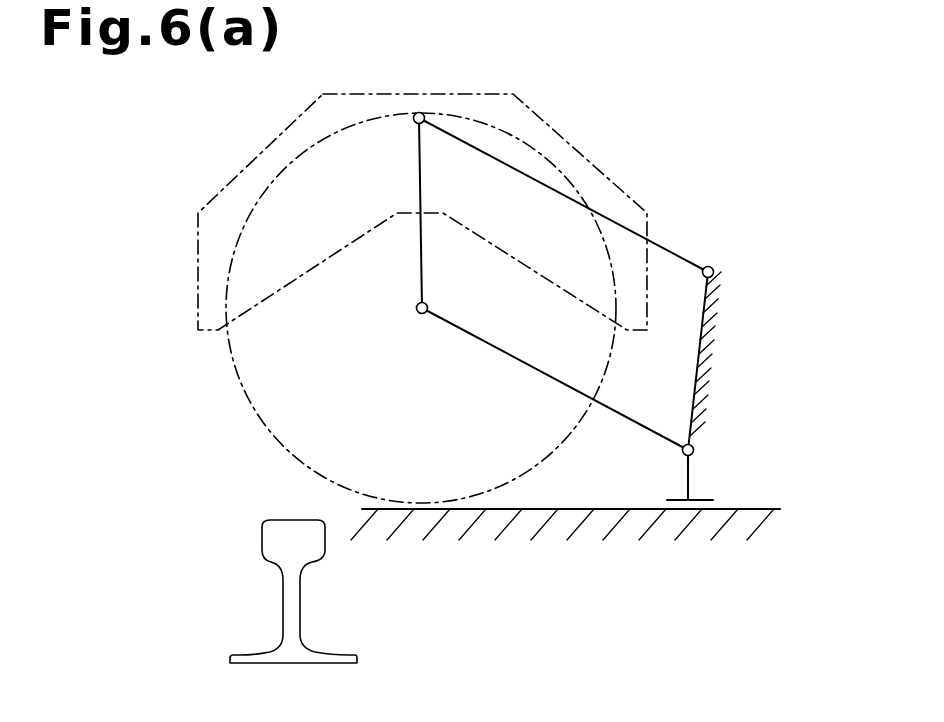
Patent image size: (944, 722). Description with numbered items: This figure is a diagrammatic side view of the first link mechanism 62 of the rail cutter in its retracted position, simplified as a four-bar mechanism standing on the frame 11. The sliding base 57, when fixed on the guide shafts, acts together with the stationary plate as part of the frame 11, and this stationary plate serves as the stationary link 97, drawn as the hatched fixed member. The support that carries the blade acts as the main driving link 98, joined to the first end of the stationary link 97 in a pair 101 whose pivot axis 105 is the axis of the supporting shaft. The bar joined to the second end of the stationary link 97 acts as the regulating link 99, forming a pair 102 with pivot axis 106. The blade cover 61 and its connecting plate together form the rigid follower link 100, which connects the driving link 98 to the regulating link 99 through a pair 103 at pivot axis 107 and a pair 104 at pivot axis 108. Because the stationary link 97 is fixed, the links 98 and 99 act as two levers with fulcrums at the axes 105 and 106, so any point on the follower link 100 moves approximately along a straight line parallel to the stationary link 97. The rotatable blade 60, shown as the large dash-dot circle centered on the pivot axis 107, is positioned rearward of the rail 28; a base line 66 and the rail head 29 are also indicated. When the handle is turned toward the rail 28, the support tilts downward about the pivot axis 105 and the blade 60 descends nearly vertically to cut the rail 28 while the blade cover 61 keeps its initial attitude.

The frame 11 is at (700, 520).
The rail 28 is at (302, 678).
The rail head 29 is at (282, 520).
The sliding base 57 is at (690, 478).
The rotatable blade 60 is at (228, 372).
The blade cover 61 is at (230, 193).
The first link mechanism 62 is at (728, 258).
The base line 66 is at (746, 504).
The stationary link 97 is at (714, 363).
The main driving link 98 is at (502, 367).
The regulating link 99 is at (670, 235).
The follower link 100 is at (404, 167).
The pair 101 is at (670, 453).
The pair 102 is at (694, 286).
The pair 103 is at (403, 300).
The pair 104 is at (424, 137).
The pivot axis 105 is at (693, 454).
The pivot axis 106 is at (713, 276).
The pivot axis 107 is at (422, 316).
The pivot axis 108 is at (419, 112).